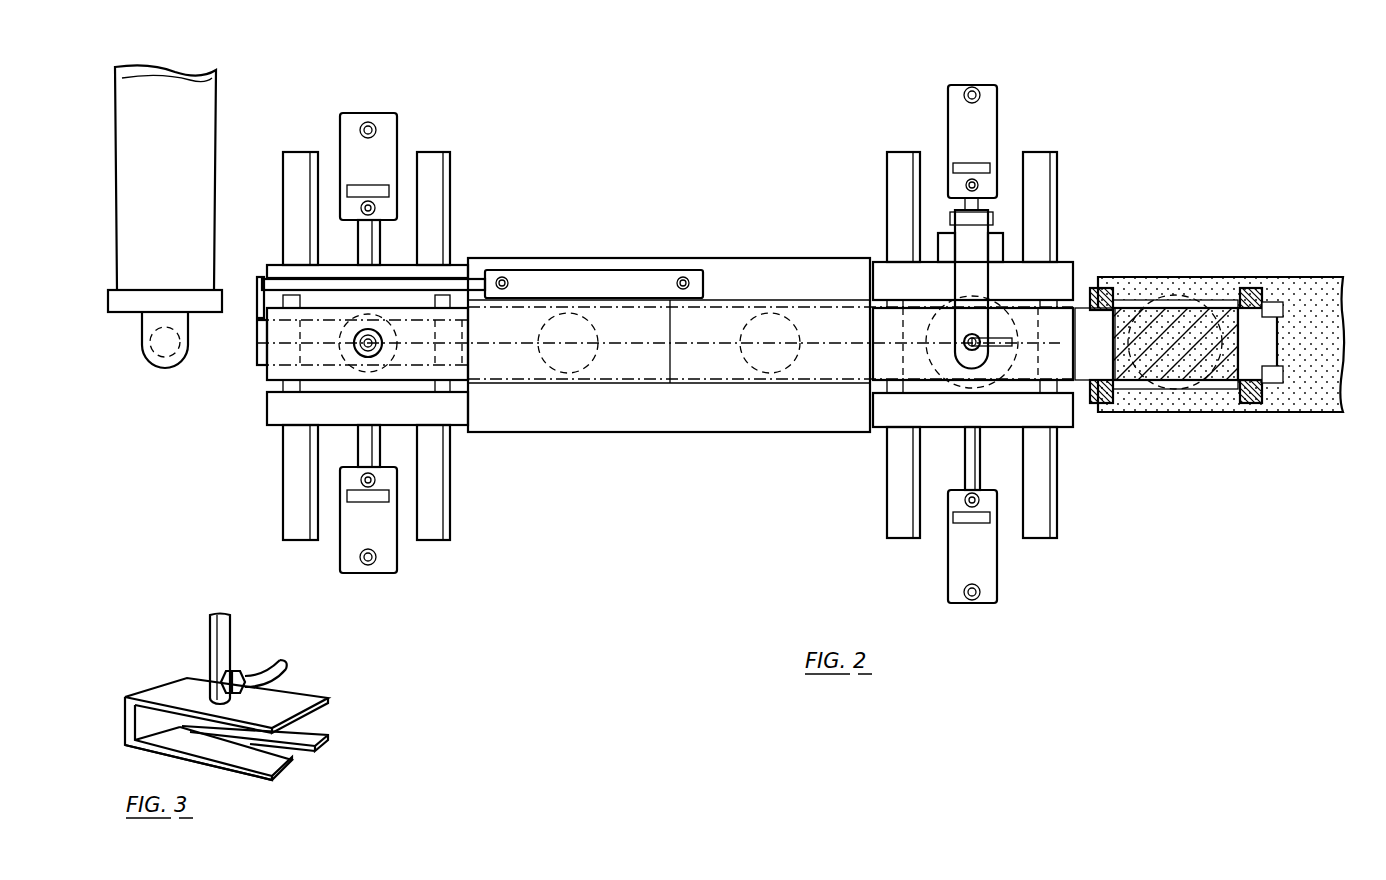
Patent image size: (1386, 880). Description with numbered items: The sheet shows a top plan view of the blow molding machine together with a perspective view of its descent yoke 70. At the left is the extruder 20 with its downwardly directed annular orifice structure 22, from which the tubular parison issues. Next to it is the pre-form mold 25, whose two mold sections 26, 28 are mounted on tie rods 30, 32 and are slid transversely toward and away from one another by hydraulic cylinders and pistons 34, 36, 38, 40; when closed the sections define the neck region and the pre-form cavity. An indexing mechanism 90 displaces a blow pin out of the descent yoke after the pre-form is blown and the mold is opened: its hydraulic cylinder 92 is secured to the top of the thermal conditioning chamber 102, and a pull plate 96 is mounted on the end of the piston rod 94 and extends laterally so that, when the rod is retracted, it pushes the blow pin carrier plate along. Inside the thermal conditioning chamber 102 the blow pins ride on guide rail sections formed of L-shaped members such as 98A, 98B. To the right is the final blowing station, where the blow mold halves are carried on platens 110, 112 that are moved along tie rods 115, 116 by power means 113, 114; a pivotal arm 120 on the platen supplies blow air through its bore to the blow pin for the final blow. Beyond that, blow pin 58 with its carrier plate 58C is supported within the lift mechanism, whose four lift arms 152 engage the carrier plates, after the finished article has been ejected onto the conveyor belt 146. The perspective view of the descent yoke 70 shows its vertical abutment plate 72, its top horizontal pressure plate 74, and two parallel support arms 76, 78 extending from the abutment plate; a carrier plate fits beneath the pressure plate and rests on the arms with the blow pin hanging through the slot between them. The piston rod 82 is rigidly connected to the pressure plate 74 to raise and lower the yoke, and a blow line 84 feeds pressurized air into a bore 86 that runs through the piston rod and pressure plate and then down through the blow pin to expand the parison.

In FIG. 2, the extruder 20 is at (180, 171).
In FIG. 2, the annular orifice structure 22 is at (152, 350).
In FIG. 2, the pre-form mold 25 is at (250, 410).
In FIG. 2, the mold section 26 is at (457, 415).
In FIG. 2, the mold section 28 is at (457, 268).
In FIG. 2, the tie rod 30 is at (298, 522).
In FIG. 2, the tie rod 32 is at (445, 522).
In FIG. 2, the hydraulic cylinder and piston 34 is at (396, 563).
In FIG. 2, the hydraulic cylinder and piston 36 is at (372, 445).
In FIG. 2, the hydraulic cylinder and piston 38 is at (377, 113).
In FIG. 2, the hydraulic cylinder and piston 40 is at (372, 238).
In FIG. 2, the blow pin 58 is at (1281, 345).
In FIG. 2, the blow pin carrier plate 58C is at (1268, 318).
In FIG. 2, the top horizontal pressure plate 74 is at (257, 348).
In FIG. 3, the top horizontal pressure plate 74 is at (315, 697).
In FIG. 2, the indexing mechanism 90 is at (250, 313).
In FIG. 2, the hydraulic cylinder 92 is at (575, 275).
In FIG. 2, the piston rod 94 is at (283, 284).
In FIG. 2, the pull plate 96 is at (257, 300).
In FIG. 2, the guide rail section 98A is at (765, 385).
In FIG. 2, the guide rail section 98B is at (778, 302).
In FIG. 2, the thermal conditioning chamber 102 is at (683, 425).
In FIG. 2, the platen 110 is at (1062, 415).
In FIG. 2, the platen 112 is at (1062, 272).
In FIG. 2, the power means 113 is at (1000, 580).
In FIG. 2, the power means 114 is at (998, 93).
In FIG. 2, the tie rod 115 is at (893, 517).
In FIG. 2, the tie rod 116 is at (1040, 517).
In FIG. 2, the arm 120 is at (958, 282).
In FIG. 2, the conveyor belt 146 is at (1170, 406).
In FIG. 2, the lift arm 152 is at (1250, 402).
In FIG. 3, the descent yoke 70 is at (148, 677).
In FIG. 3, the vertical abutment plate 72 is at (125, 720).
In FIG. 3, the support arm 76 is at (272, 781).
In FIG. 3, the support arm 78 is at (320, 750).
In FIG. 3, the piston rod 82 is at (213, 614).
In FIG. 3, the blow line 84 is at (272, 675).
In FIG. 3, the bore 86 is at (212, 675).